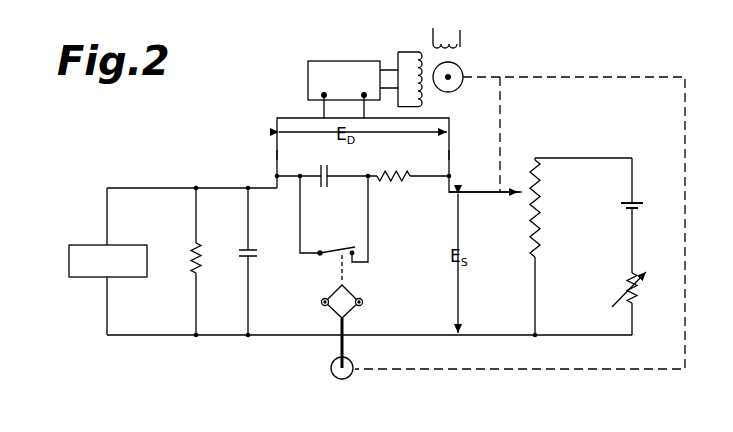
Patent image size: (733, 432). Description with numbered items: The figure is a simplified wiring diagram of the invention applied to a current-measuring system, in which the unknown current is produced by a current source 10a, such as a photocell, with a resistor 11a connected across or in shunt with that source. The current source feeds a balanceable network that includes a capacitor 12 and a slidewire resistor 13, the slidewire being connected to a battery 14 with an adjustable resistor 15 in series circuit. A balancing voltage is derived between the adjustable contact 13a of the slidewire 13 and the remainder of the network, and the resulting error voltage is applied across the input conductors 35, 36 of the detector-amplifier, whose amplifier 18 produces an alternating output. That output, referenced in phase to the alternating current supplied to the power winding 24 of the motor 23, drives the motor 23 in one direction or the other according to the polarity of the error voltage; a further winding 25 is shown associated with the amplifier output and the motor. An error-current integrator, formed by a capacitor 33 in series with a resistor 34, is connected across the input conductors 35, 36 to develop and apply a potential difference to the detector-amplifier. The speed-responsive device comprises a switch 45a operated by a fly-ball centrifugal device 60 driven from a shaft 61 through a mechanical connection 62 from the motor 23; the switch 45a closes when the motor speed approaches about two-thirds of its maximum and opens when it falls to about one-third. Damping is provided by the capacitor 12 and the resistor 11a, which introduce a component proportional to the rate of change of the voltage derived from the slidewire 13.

The current source 10a is at (80, 244).
The resistor 11a is at (193, 246).
The capacitor 12 is at (259, 258).
The slidewire resistor 13 is at (541, 245).
The adjustable contact 13a is at (520, 195).
The battery 14 is at (620, 203).
The adjustable resistor 15 is at (615, 298).
The amplifier 18 is at (308, 85).
The motor 23 is at (457, 89).
The power winding 24 is at (461, 47).
The control winding 25 is at (420, 51).
The capacitor 33 is at (324, 188).
The resistor 34 is at (397, 185).
The input conductor 35 is at (277, 153).
The input conductor 36 is at (451, 156).
The switch 45a is at (360, 246).
The relay element 60 is at (360, 307).
The shaft 61 is at (331, 367).
The mechanical connection 62 is at (520, 371).